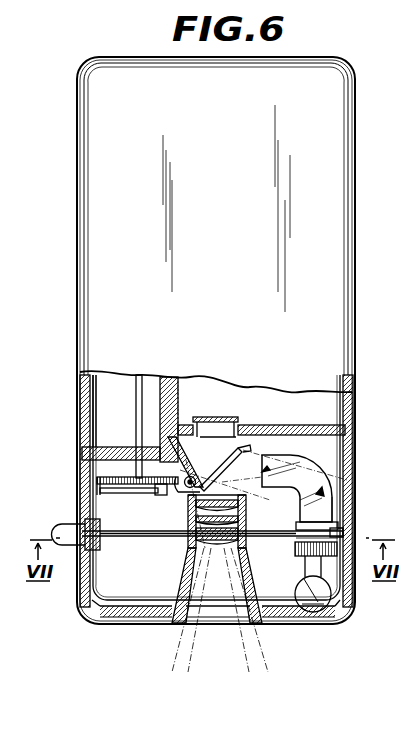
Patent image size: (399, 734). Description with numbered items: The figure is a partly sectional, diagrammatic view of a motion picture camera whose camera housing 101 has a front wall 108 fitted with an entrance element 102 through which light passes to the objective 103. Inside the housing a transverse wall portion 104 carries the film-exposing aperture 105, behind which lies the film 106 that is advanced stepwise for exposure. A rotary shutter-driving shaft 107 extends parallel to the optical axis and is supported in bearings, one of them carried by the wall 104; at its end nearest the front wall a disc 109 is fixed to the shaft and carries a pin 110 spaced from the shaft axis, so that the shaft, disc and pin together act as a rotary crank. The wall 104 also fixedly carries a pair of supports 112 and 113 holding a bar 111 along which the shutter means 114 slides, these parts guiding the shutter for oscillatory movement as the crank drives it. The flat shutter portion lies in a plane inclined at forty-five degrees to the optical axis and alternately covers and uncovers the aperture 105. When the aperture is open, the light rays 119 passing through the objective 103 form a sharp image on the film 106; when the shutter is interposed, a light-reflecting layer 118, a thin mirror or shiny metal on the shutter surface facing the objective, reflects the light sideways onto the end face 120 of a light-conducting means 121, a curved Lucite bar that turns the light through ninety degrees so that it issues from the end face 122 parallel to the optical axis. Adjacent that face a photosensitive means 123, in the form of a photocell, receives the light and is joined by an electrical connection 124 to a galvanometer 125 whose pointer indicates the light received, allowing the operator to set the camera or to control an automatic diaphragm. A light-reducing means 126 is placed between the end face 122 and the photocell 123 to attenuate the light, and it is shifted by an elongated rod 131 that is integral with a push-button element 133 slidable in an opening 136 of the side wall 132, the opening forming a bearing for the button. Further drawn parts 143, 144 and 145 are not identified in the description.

The camera housing 101 is at (77, 410).
The entrance element 102 is at (246, 610).
The objective 103 is at (190, 540).
The transverse wall portion 104 is at (314, 425).
The film-exposing aperture 105 is at (260, 396).
The film 106 is at (187, 393).
The rotary shutter-driving shaft 107 is at (139, 375).
The front wall 108 is at (130, 624).
The disc 109 is at (95, 486).
The pin 110 is at (150, 485).
The bar 111 is at (185, 489).
The support 112 is at (226, 417).
The support 113 is at (143, 440).
The shutter means 114 is at (105, 481).
The light-reflecting layer 118 is at (252, 440).
The light rays 119 is at (244, 662).
The end face 120 is at (288, 462).
The light-conducting means 121 is at (332, 470).
The end face 122 is at (338, 492).
The photosensitive means 123 is at (295, 550).
The electrical connection 124 is at (350, 590).
The galvanometer 125 is at (322, 610).
The light-reducing means 126 is at (343, 522).
The elongated rod 131 is at (135, 537).
The side wall 132 is at (82, 580).
The push-button element 133 is at (65, 530).
The opening 136 is at (368, 470).
The ring 143 is at (347, 411).
The sleeve 144 is at (368, 434).
The cap 145 is at (371, 399).